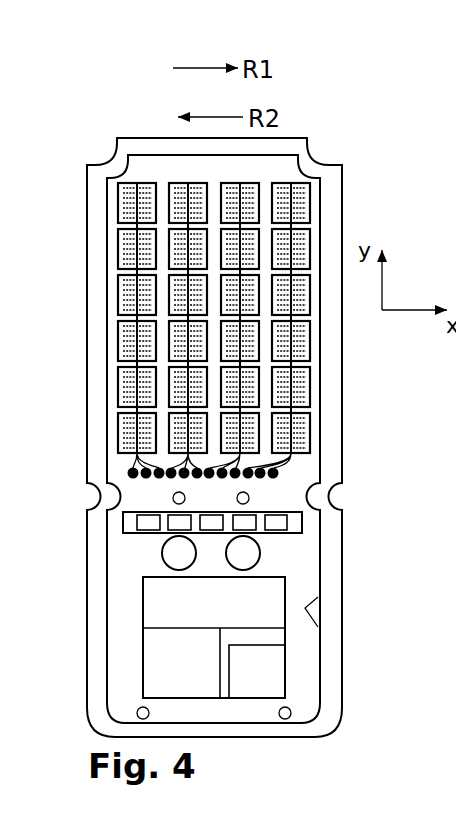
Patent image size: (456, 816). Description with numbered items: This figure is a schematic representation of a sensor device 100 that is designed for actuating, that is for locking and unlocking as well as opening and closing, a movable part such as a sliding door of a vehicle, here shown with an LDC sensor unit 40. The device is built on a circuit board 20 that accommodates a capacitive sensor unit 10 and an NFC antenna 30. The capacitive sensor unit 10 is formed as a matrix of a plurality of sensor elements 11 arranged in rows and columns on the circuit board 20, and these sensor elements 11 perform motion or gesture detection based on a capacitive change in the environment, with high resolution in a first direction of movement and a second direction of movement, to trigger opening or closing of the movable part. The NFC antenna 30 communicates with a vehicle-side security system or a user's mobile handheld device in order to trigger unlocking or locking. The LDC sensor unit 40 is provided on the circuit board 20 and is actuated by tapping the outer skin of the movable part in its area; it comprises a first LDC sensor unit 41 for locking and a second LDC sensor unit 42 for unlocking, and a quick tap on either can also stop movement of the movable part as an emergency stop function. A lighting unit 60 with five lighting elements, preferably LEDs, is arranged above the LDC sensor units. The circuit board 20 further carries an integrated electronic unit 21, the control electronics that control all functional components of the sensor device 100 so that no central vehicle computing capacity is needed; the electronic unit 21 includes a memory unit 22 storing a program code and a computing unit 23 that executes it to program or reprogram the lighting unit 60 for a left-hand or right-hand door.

The sensor device 100 is at (97, 116).
The capacitive sensor unit 10 is at (109, 205).
The sensor elements 11 is at (128, 425).
The NFC antenna 30 is at (322, 460).
The lighting unit 60 is at (122, 521).
The LDC sensor unit 40 is at (161, 552).
The first LDC sensor unit 41 is at (182, 557).
The second LDC sensor unit 42 is at (242, 563).
The circuit board 20 is at (308, 565).
The electronic unit 21 is at (263, 605).
The memory unit 22 is at (193, 640).
The computing unit 23 is at (248, 675).